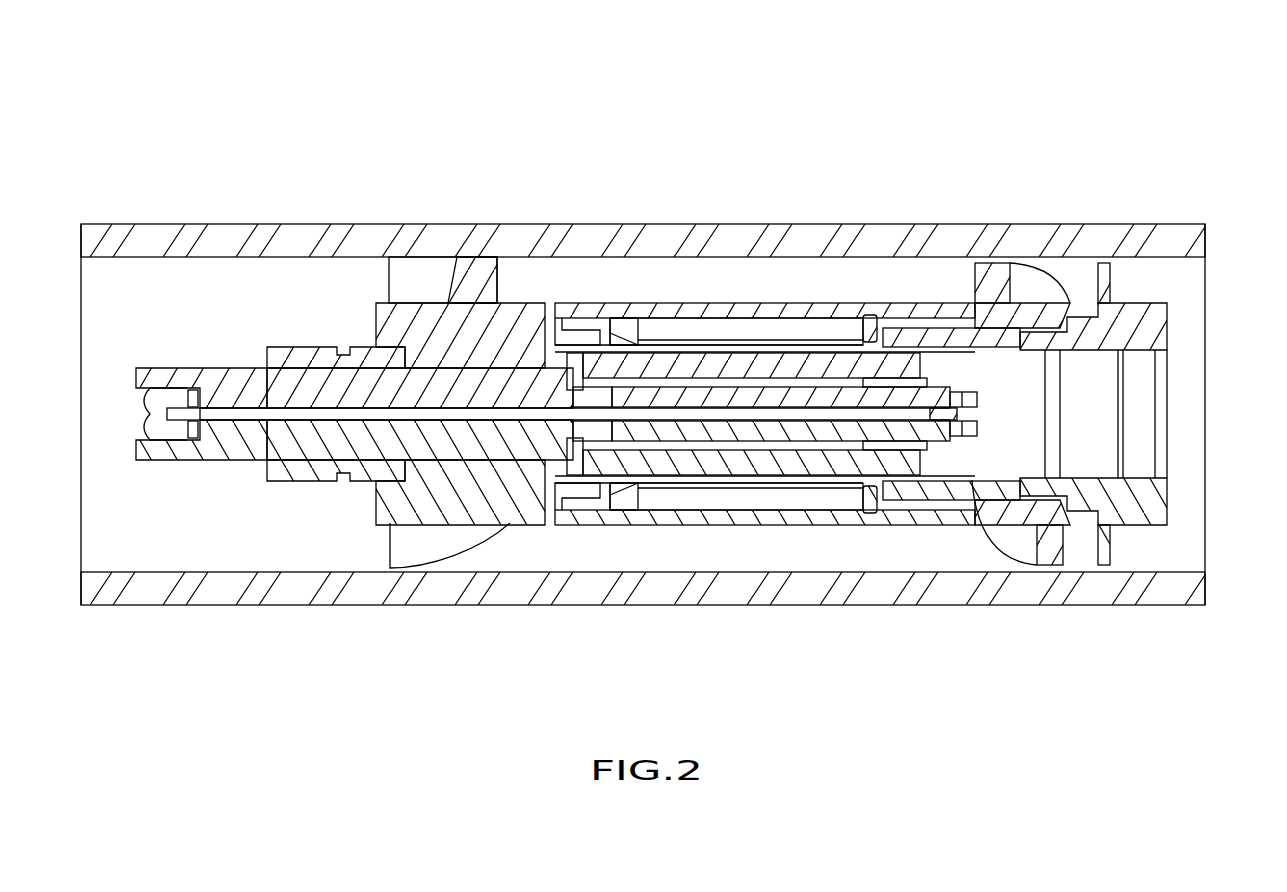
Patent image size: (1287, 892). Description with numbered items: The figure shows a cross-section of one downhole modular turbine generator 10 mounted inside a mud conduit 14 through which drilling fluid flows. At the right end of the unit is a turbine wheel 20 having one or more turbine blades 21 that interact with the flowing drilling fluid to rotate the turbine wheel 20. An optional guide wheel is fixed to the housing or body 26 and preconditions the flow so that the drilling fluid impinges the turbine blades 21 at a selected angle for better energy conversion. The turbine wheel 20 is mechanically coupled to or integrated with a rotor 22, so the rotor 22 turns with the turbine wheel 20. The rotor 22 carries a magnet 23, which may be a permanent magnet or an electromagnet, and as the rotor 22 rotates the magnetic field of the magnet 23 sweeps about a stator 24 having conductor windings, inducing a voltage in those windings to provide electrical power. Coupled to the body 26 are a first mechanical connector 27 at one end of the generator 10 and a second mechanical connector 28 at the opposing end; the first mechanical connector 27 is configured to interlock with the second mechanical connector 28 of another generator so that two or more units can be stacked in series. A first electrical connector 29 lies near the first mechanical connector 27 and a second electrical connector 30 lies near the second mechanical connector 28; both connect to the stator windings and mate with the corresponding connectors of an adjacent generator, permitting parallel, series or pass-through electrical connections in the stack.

The downhole modular turbine generator 10 is at (434, 147).
The mud conduit 14 is at (272, 592).
The turbine wheel 20 is at (996, 272).
The turbine blade 21 is at (1033, 280).
The rotor 22 is at (745, 498).
The magnet 23 is at (790, 498).
The stator 24 is at (617, 462).
The body 26 is at (972, 482).
The first mechanical connector 27 is at (326, 352).
The second mechanical connector 28 is at (1148, 500).
The first electrical connector 29 is at (199, 417).
The second electrical connector 30 is at (952, 425).